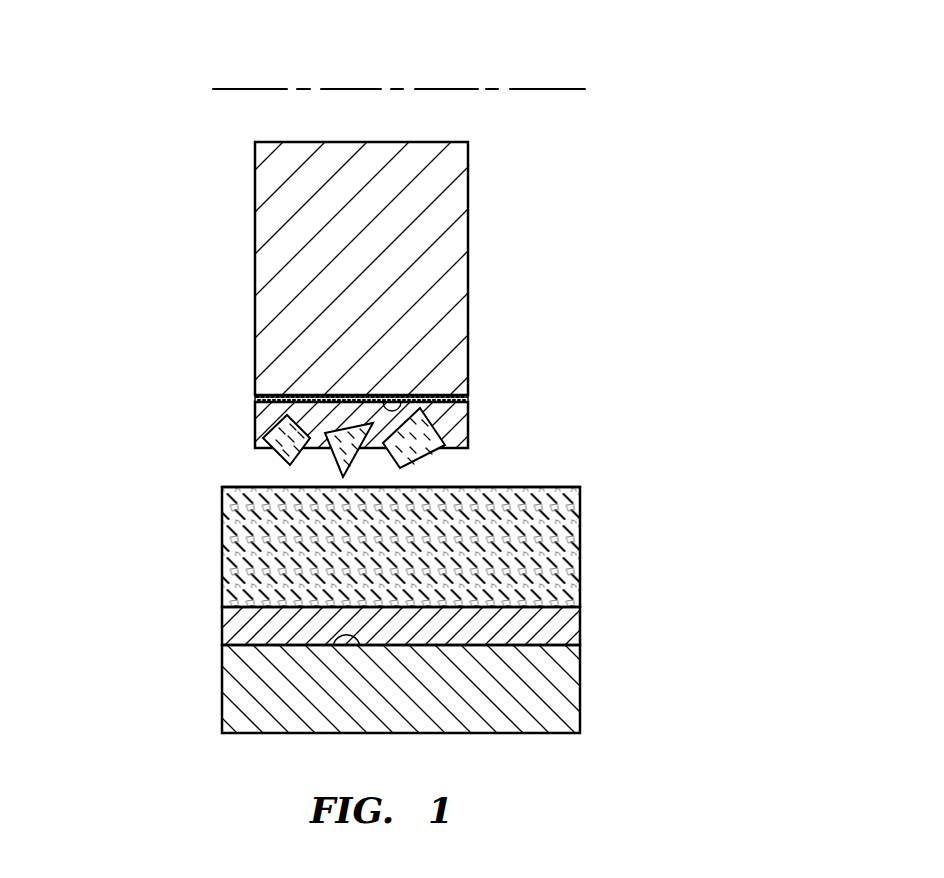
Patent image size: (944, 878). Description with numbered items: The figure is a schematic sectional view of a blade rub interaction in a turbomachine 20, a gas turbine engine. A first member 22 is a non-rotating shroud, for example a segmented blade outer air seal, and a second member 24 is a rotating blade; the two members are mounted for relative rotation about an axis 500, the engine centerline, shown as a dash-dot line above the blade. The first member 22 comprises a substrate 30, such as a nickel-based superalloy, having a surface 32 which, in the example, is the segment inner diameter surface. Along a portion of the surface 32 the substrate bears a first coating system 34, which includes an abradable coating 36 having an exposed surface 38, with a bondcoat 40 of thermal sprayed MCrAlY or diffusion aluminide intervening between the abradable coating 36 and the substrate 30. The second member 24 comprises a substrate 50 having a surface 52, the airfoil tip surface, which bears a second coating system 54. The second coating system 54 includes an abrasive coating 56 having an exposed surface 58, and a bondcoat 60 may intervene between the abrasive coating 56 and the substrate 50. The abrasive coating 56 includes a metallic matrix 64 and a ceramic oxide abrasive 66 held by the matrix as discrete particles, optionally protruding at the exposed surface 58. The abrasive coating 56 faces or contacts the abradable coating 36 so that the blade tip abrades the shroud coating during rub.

The axis 500 is at (540, 88).
The second member 24 is at (333, 309).
The substrate 50 is at (442, 212).
The second coating system 54 is at (378, 399).
The bondcoat 60 is at (468, 400).
The abrasive coating 56 is at (462, 430).
The surface 52 is at (403, 400).
The metallic matrix 64 is at (476, 417).
The ceramic oxide abrasive 66 is at (415, 445).
The exposed surface 58 is at (378, 470).
The turbomachine 20 is at (114, 423).
The first member 22 is at (375, 594).
The first coating system 34 is at (408, 555).
The abradable coating 36 is at (573, 537).
The exposed surface 38 is at (250, 488).
The bondcoat 40 is at (573, 632).
The substrate 30 is at (573, 700).
The surface 32 is at (333, 646).